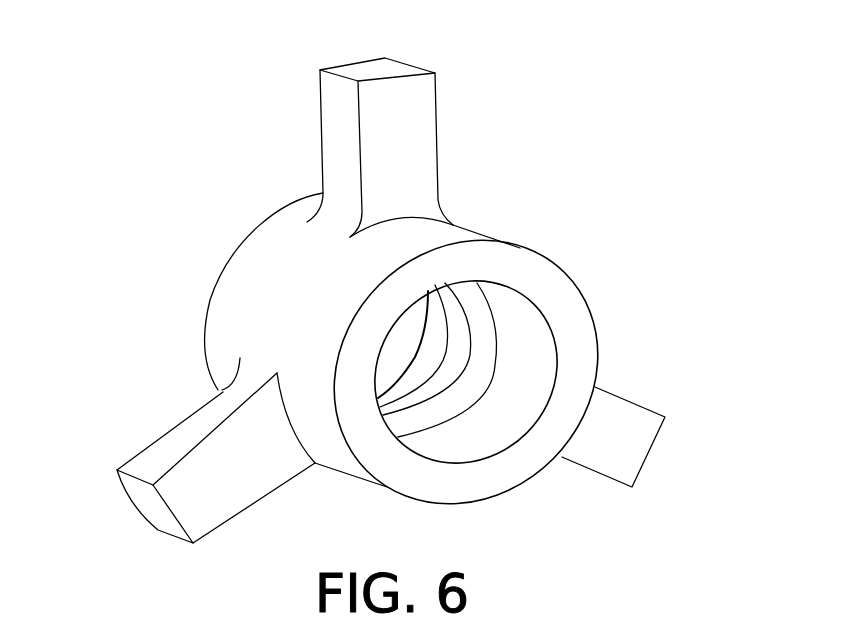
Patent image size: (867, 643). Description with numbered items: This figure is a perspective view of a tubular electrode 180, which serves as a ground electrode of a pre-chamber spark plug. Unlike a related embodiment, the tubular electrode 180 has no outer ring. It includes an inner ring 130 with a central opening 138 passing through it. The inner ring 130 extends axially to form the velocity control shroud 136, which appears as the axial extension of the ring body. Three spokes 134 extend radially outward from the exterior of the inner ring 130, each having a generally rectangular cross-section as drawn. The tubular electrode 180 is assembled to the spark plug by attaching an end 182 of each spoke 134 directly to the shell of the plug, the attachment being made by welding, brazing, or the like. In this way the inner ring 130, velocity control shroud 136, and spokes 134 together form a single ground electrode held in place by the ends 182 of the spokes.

The inner ring 130 is at (449, 372).
The spokes 134 is at (394, 276).
The velocity control shroud 136 is at (530, 482).
The central opening 138 is at (440, 322).
The tubular electrode 180 is at (394, 283).
The end 182 is at (355, 67).